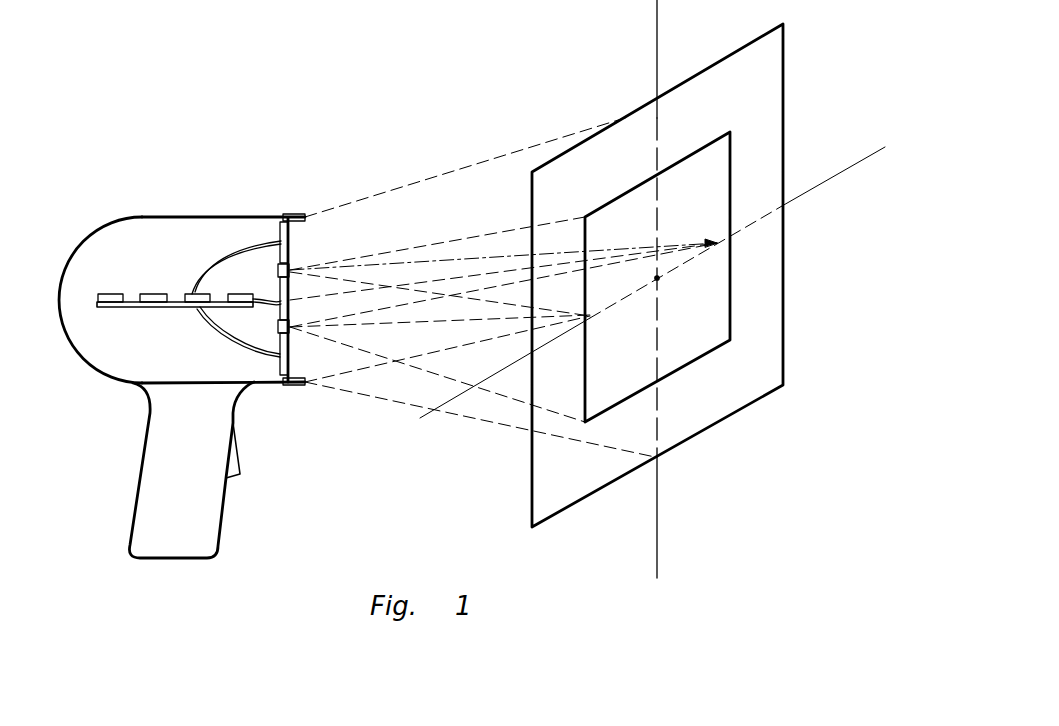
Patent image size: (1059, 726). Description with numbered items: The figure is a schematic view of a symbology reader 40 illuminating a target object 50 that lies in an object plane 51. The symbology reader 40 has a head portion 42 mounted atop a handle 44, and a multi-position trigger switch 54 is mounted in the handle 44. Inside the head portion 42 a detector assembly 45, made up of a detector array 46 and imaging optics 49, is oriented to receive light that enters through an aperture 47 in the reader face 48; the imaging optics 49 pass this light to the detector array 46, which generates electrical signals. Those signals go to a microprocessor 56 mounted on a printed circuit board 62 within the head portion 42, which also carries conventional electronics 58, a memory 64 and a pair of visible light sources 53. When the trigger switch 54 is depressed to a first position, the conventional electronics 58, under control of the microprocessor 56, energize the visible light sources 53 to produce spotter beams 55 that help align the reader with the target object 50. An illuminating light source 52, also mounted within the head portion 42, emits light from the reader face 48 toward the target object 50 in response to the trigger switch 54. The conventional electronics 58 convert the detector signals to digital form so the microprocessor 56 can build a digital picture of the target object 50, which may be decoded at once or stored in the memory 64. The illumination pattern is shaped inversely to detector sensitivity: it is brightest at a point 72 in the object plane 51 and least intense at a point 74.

The symbology reader 40 is at (147, 217).
The head portion 42 is at (88, 232).
The handle 44 is at (142, 458).
The detector assembly 45 is at (279, 332).
The detector array 46 is at (279, 268).
The aperture 47 is at (317, 353).
The reader face 48 is at (290, 248).
The imaging optics 49 is at (293, 300).
The target object 50 is at (628, 117).
The object plane 51 is at (659, 527).
The illuminating light source 52 is at (289, 216).
The visible light sources 53 is at (292, 270).
The multi-position trigger switch 54 is at (242, 474).
The spotter beam 55 is at (475, 258).
The microprocessor 56 is at (243, 307).
The conventional electronics 58 is at (186, 294).
The printed circuit board 62 is at (133, 308).
The memory 64 is at (112, 294).
The point of maximum illumination 72 is at (586, 421).
The point of least intense illumination 74 is at (657, 278).